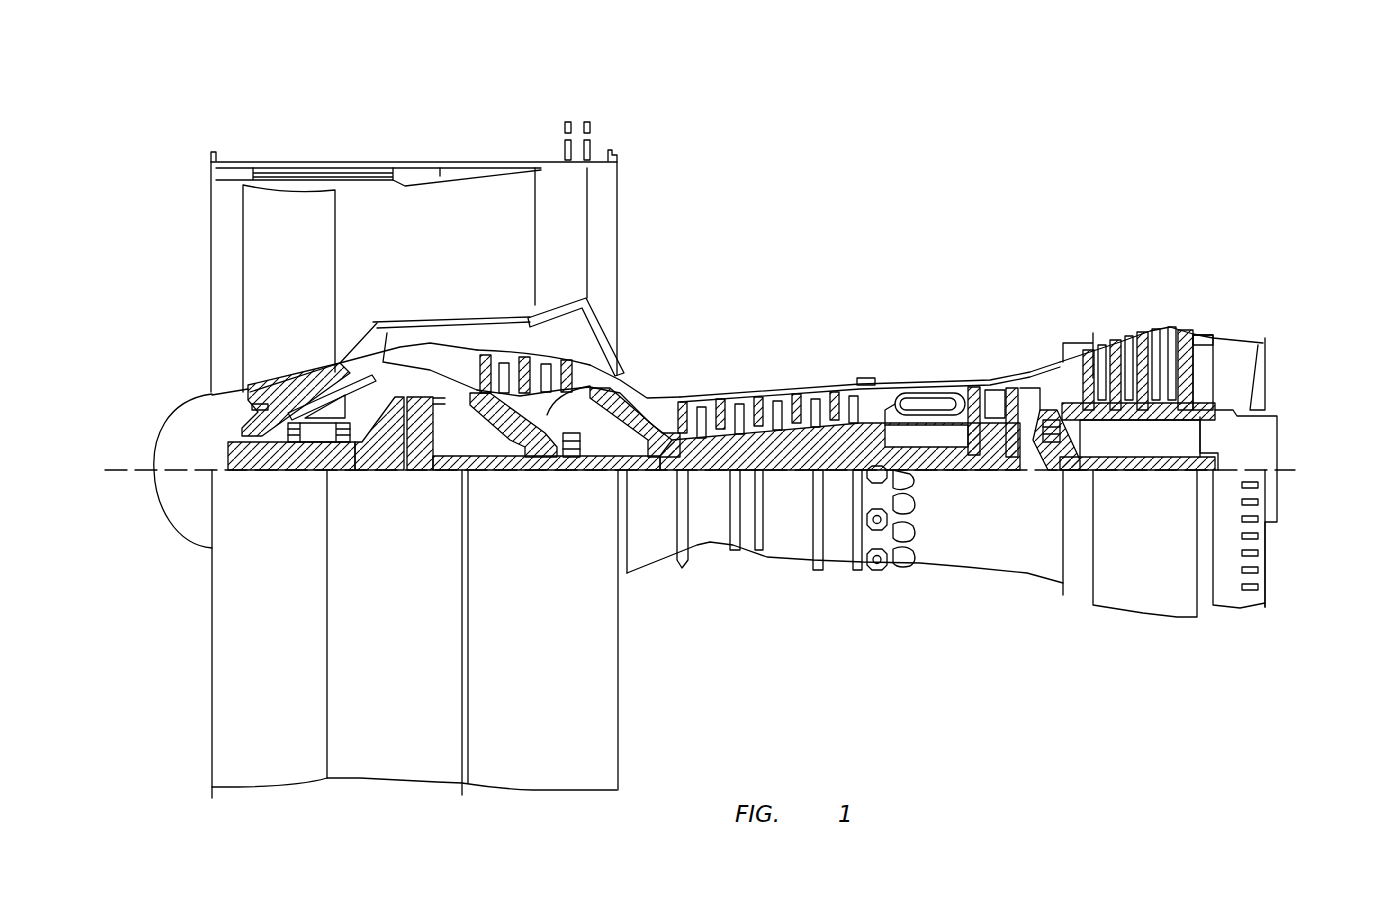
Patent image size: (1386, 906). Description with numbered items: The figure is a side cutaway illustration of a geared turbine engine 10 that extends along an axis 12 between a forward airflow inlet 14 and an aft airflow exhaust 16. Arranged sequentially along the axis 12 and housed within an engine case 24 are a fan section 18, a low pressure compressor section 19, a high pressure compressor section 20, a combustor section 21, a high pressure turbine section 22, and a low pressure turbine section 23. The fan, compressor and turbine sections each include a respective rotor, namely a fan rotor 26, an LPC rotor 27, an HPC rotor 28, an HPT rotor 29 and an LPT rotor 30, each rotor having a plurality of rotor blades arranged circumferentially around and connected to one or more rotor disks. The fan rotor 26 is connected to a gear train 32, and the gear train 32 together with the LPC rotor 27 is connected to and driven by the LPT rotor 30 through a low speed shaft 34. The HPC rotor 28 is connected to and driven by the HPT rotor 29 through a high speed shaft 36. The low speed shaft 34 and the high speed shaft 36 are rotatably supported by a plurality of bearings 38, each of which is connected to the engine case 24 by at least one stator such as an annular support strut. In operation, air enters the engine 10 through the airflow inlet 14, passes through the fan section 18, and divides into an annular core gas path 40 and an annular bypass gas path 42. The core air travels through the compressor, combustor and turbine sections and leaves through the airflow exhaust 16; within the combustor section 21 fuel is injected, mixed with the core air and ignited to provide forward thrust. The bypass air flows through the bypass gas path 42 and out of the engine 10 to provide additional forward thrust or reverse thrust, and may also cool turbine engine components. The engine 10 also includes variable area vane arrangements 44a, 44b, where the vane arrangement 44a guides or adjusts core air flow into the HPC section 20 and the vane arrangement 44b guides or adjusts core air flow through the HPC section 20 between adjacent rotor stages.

The geared turbine engine 10 is at (176, 130).
The axis 12 is at (1352, 468).
The airflow inlet 14 is at (211, 318).
The airflow exhaust 16 is at (1267, 372).
The fan section 18 is at (306, 158).
The low pressure compressor (LPC) section 19 is at (572, 350).
The high pressure compressor (HPC) section 20 is at (812, 378).
The combustor section 21 is at (947, 378).
The high pressure turbine (HPT) section 22 is at (1009, 378).
The low pressure turbine (LPT) section 23 is at (1163, 323).
The engine case 24 is at (987, 568).
The fan rotor 26 is at (225, 403).
The LPC rotor 27 is at (555, 410).
The HPC rotor 28 is at (822, 420).
The HPT rotor 29 is at (1047, 450).
The LPT rotor 30 is at (1193, 368).
The gear train 32 is at (418, 458).
The low speed shaft 34 is at (1030, 455).
The high speed shaft 36 is at (955, 455).
The bearings 38 is at (297, 442).
The core gas path 40 is at (648, 392).
The bypass gas path 42 is at (488, 193).
The vane arrangement 44a is at (688, 398).
The vane arrangement 44b is at (722, 403).